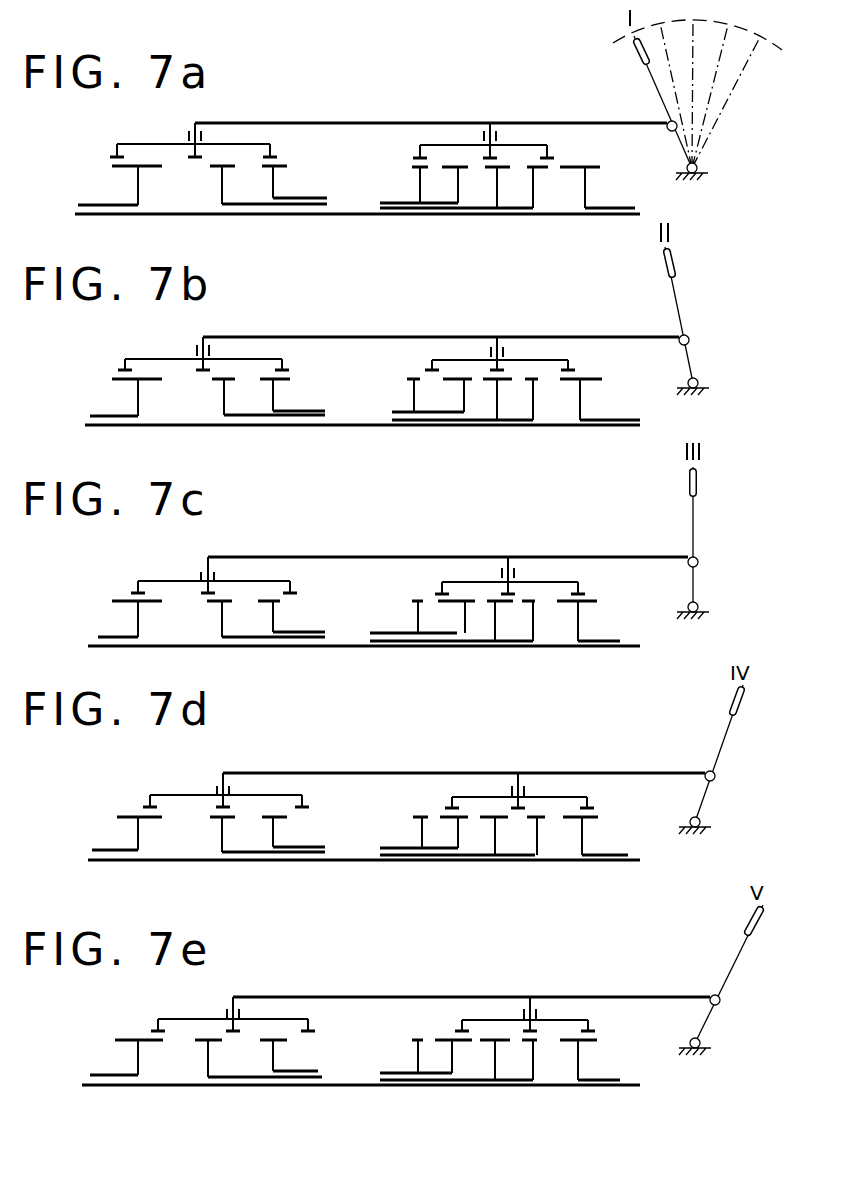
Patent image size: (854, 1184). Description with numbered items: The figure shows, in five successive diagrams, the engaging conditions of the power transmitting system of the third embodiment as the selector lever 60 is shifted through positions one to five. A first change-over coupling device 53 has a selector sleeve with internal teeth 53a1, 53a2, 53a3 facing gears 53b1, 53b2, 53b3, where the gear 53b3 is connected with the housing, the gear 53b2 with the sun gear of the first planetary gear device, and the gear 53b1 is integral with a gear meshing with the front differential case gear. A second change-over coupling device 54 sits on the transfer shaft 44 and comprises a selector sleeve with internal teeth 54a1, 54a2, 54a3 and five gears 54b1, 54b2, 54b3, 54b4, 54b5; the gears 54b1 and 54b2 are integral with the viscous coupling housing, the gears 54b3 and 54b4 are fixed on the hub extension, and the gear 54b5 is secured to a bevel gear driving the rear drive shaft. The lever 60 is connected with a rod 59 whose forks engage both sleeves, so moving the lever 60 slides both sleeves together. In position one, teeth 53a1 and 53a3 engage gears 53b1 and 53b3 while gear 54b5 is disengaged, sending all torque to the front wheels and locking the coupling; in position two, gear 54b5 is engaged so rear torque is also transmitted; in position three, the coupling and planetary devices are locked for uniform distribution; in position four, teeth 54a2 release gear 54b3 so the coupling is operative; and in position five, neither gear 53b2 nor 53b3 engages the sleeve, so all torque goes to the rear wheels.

In FIG. 7a, the transfer shaft 44 is at (368, 218).
In FIG. 7b, the transfer shaft 44 is at (342, 428).
In FIG. 7c, the transfer shaft 44 is at (335, 650).
In FIG. 7d, the transfer shaft 44 is at (336, 865).
In FIG. 7e, the transfer shaft 44 is at (334, 1090).
In FIG. 7a, the first change-over coupling device 53 is at (217, 218).
In FIG. 7b, the first change-over coupling device 53 is at (205, 428).
In FIG. 7c, the first change-over coupling device 53 is at (213, 650).
In FIG. 7d, the first change-over coupling device 53 is at (213, 868).
In FIG. 7e, the first change-over coupling device 53 is at (205, 1091).
In FIG. 7a, the internal teeth 53a1 is at (114, 155).
In FIG. 7b, the internal teeth 53a1 is at (127, 368).
In FIG. 7c, the internal teeth 53a1 is at (134, 593).
In FIG. 7d, the internal teeth 53a1 is at (149, 807).
In FIG. 7e, the internal teeth 53a1 is at (158, 1030).
In FIG. 7a, the internal teeth 53a2 is at (194, 155).
In FIG. 7b, the internal teeth 53a2 is at (201, 367).
In FIG. 7c, the internal teeth 53a2 is at (208, 590).
In FIG. 7d, the internal teeth 53a2 is at (220, 802).
In FIG. 7e, the internal teeth 53a2 is at (230, 1029).
In FIG. 7a, the internal teeth 53a3 is at (272, 152).
In FIG. 7b, the internal teeth 53a3 is at (290, 365).
In FIG. 7c, the internal teeth 53a3 is at (294, 589).
In FIG. 7d, the internal teeth 53a3 is at (304, 799).
In FIG. 7e, the internal teeth 53a3 is at (313, 1029).
In FIG. 7a, the gear 53b1 is at (124, 174).
In FIG. 7b, the gear 53b1 is at (130, 385).
In FIG. 7c, the gear 53b1 is at (127, 608).
In FIG. 7d, the gear 53b1 is at (133, 824).
In FIG. 7e, the gear 53b1 is at (130, 1046).
In FIG. 7a, the gear 53b2 is at (213, 176).
In FIG. 7b, the gear 53b2 is at (217, 386).
In FIG. 7c, the gear 53b2 is at (216, 608).
In FIG. 7d, the gear 53b2 is at (214, 822).
In FIG. 7e, the gear 53b2 is at (203, 1044).
In FIG. 7a, the gear 53b3 is at (283, 171).
In FIG. 7b, the gear 53b3 is at (280, 383).
In FIG. 7c, the gear 53b3 is at (280, 604).
In FIG. 7d, the gear 53b3 is at (287, 818).
In FIG. 7e, the gear 53b3 is at (284, 1041).
In FIG. 7a, the second change-over coupling device 54 is at (510, 224).
In FIG. 7b, the second change-over coupling device 54 is at (510, 438).
In FIG. 7c, the second change-over coupling device 54 is at (514, 664).
In FIG. 7d, the second change-over coupling device 54 is at (511, 872).
In FIG. 7e, the second change-over coupling device 54 is at (520, 1101).
In FIG. 7a, the internal teeth 54a1 is at (416, 157).
In FIG. 7b, the internal teeth 54a1 is at (428, 369).
In FIG. 7c, the internal teeth 54a1 is at (440, 592).
In FIG. 7d, the internal teeth 54a1 is at (445, 807).
In FIG. 7e, the internal teeth 54a1 is at (465, 1031).
In FIG. 7a, the internal teeth 54a2 is at (493, 156).
In FIG. 7b, the internal teeth 54a2 is at (502, 368).
In FIG. 7c, the internal teeth 54a2 is at (510, 592).
In FIG. 7d, the internal teeth 54a2 is at (514, 806).
In FIG. 7e, the internal teeth 54a2 is at (528, 1030).
In FIG. 7a, the internal teeth 54a3 is at (554, 158).
In FIG. 7b, the internal teeth 54a3 is at (558, 368).
In FIG. 7c, the internal teeth 54a3 is at (565, 590).
In FIG. 7d, the internal teeth 54a3 is at (584, 808).
In FIG. 7e, the internal teeth 54a3 is at (586, 1029).
In FIG. 7a, the gear 54b1 is at (414, 168).
In FIG. 7b, the gear 54b1 is at (414, 377).
In FIG. 7c, the gear 54b1 is at (408, 596).
In FIG. 7d, the gear 54b1 is at (415, 815).
In FIG. 7e, the gear 54b1 is at (410, 1037).
In FIG. 7a, the gear 54b2 is at (465, 208).
In FIG. 7b, the gear 54b2 is at (464, 418).
In FIG. 7c, the gear 54b2 is at (469, 638).
In FIG. 7d, the gear 54b2 is at (471, 850).
In FIG. 7e, the gear 54b2 is at (440, 1073).
In FIG. 7a, the gear 54b3 is at (487, 173).
In FIG. 7b, the gear 54b3 is at (484, 385).
In FIG. 7c, the gear 54b3 is at (484, 610).
In FIG. 7d, the gear 54b3 is at (482, 825).
In FIG. 7e, the gear 54b3 is at (477, 1044).
In FIG. 7a, the gear 54b4 is at (535, 173).
In FIG. 7b, the gear 54b4 is at (538, 383).
In FIG. 7c, the gear 54b4 is at (530, 607).
In FIG. 7d, the gear 54b4 is at (540, 821).
In FIG. 7e, the gear 54b4 is at (533, 1045).
In FIG. 7a, the gear 54b5 is at (598, 171).
In FIG. 7b, the gear 54b5 is at (591, 381).
In FIG. 7c, the gear 54b5 is at (599, 596).
In FIG. 7d, the gear 54b5 is at (591, 819).
In FIG. 7e, the gear 54b5 is at (590, 1045).
In FIG. 7a, the rod 59 is at (351, 110).
In FIG. 7b, the rod 59 is at (353, 335).
In FIG. 7c, the rod 59 is at (351, 547).
In FIG. 7d, the rod 59 is at (362, 752).
In FIG. 7e, the rod 59 is at (356, 987).
In FIG. 7a, the selector lever 60 is at (662, 100).
In FIG. 7b, the selector lever 60 is at (669, 308).
In FIG. 7c, the selector lever 60 is at (690, 530).
In FIG. 7d, the selector lever 60 is at (718, 748).
In FIG. 7e, the selector lever 60 is at (727, 958).